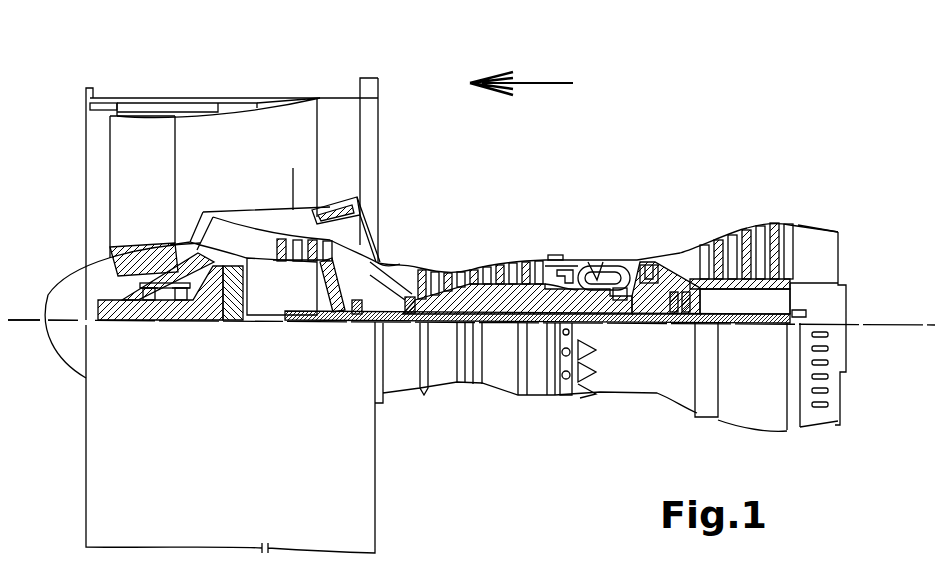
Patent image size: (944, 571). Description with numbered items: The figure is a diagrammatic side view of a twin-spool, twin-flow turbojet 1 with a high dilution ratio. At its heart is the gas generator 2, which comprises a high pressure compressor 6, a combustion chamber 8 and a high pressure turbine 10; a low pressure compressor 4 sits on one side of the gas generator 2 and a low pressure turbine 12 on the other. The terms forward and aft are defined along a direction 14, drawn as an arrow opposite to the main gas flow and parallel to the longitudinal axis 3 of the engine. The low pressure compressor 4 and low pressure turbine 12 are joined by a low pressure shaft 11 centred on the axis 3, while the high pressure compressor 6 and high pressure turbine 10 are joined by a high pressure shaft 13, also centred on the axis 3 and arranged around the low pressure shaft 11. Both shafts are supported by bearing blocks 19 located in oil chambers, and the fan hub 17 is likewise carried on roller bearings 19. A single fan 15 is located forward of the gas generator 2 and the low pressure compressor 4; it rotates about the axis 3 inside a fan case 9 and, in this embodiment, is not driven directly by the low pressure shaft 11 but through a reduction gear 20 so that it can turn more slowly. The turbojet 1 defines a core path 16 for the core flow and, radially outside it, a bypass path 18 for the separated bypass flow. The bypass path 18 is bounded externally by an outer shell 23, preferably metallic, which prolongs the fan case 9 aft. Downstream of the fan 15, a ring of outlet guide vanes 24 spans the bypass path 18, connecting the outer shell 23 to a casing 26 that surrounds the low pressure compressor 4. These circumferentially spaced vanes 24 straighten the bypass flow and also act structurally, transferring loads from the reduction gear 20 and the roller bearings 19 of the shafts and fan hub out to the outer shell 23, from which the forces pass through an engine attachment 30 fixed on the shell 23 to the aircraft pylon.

The turbojet 1 is at (546, 196).
The gas generator 2 is at (484, 403).
The longitudinal axis 3 is at (22, 325).
The low pressure compressor 4 is at (338, 194).
The high pressure compressor 6 is at (500, 260).
The combustion chamber 8 is at (596, 270).
The fan case 9 is at (195, 100).
The high pressure turbine 10 is at (648, 262).
The low pressure shaft 11 is at (410, 325).
The low pressure turbine 12 is at (745, 238).
The high pressure shaft 13 is at (637, 325).
The direction 14 is at (548, 80).
The fan 15 is at (128, 100).
The core path 16 is at (405, 262).
The fan hub 17 is at (152, 320).
The bypass path 18 is at (240, 159).
The bearing blocks 19 is at (185, 322).
The reduction gear 20 is at (237, 323).
The outer shell 23 is at (292, 102).
The outlet guide vanes 24 is at (335, 153).
The casing 26 is at (300, 167).
The engine attachment 30 is at (367, 86).